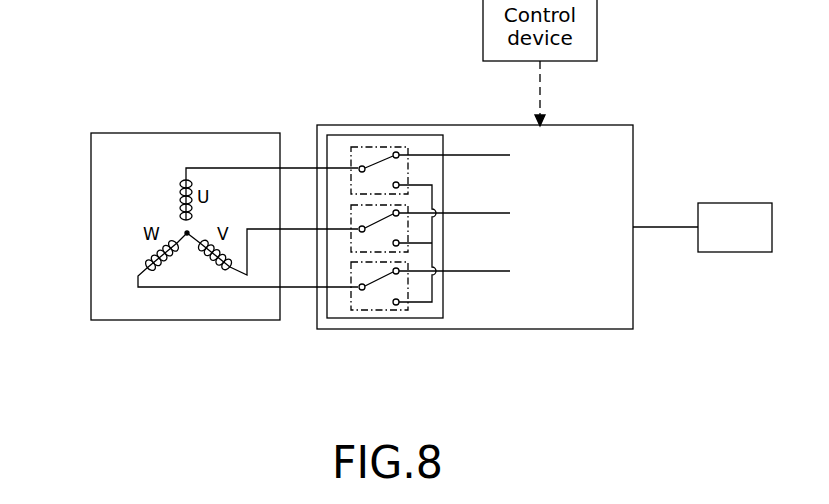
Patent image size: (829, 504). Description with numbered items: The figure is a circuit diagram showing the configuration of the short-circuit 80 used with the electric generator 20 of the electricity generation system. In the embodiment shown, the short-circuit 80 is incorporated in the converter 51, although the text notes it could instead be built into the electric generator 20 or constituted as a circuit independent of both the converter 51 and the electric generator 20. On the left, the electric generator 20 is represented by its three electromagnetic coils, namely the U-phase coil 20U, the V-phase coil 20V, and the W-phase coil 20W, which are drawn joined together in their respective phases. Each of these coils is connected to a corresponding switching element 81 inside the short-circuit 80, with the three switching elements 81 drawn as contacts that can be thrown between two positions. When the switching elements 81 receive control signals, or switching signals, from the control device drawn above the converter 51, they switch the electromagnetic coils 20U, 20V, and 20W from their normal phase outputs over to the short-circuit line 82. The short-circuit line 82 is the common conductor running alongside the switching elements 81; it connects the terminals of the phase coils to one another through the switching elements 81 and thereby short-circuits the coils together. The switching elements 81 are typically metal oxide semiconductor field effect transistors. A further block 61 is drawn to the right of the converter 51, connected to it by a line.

The electric generator 20 is at (118, 133).
The electromagnetic coil (U-phase) 20U is at (180, 192).
The electromagnetic coil (V-phase) 20V is at (212, 263).
The electromagnetic coil (W-phase) 20W is at (147, 263).
The converter 51 is at (617, 125).
The battery / power source 61 is at (741, 203).
The short-circuit 80 is at (430, 135).
The switching element 81 is at (361, 147).
The short-circuit line 82 is at (425, 308).